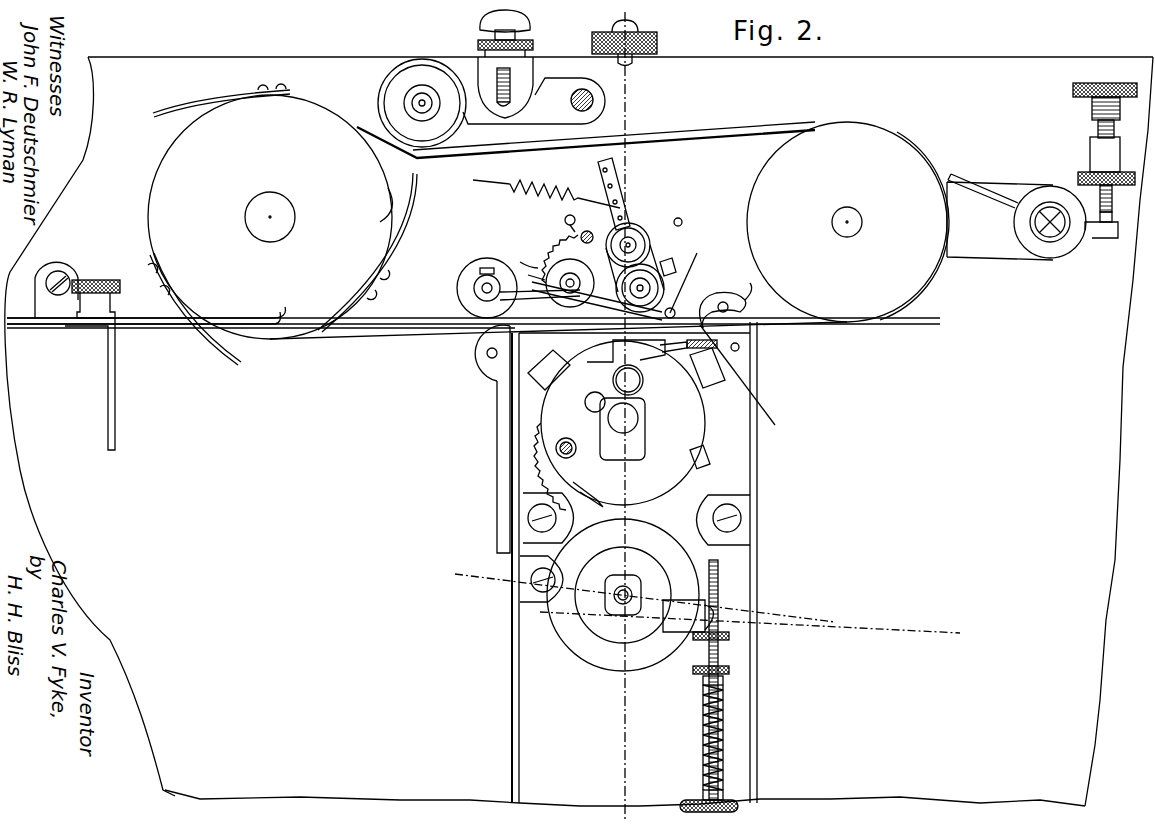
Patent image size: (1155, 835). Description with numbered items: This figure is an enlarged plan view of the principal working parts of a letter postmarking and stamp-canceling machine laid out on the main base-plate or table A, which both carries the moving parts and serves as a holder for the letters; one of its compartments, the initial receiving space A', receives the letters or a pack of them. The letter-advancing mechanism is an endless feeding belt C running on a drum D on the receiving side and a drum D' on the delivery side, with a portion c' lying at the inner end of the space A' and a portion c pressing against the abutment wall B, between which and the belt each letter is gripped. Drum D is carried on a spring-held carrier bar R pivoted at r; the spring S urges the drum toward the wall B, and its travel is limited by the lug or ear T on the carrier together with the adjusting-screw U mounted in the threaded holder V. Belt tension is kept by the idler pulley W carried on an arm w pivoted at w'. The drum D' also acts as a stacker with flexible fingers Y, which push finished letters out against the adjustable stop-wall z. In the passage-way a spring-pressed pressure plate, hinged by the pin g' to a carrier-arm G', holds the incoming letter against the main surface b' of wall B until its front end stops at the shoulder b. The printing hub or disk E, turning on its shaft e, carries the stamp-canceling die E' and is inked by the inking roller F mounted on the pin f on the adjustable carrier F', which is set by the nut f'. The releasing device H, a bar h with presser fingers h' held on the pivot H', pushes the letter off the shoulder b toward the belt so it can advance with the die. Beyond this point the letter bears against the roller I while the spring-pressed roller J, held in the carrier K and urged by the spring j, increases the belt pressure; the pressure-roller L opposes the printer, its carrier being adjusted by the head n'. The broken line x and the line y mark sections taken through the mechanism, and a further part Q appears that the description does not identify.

The main base-plate or table A is at (579, 431).
The initial receiving space A' is at (882, 576).
The section line x- x is at (618, 411).
The delivery-side pulley or drum D' is at (270, 217).
The flexible fingers Y is at (418, 185).
The belt portion at initial receiving space c' is at (388, 309).
The belt portion adjacent to abutment wall c is at (605, 328).
The idler pulley or roll W is at (390, 95).
The tightener arm w is at (534, 90).
The arm pivot w' is at (577, 74).
The adjusting-head n' is at (637, 43).
The endless feeding belt C is at (558, 222).
The spring Q is at (546, 183).
The roller spring j is at (575, 222).
The pressure-roller L is at (650, 262).
The spring-pressed roller J is at (466, 278).
The roller carrier K is at (532, 302).
The shoulder or projection b is at (597, 301).
The carrier-arm G' is at (559, 269).
The hinge pin g' is at (684, 265).
The abutment wall B is at (740, 344).
The roller I is at (472, 355).
The adjustable stop-wall z is at (108, 355).
The hub or heavy disk E is at (619, 425).
The disk shaft e is at (640, 412).
The stamp-canceling die E' is at (574, 457).
The releasing device H is at (624, 366).
The presser fingers or plates h' is at (600, 351).
The main surface of wall b' is at (656, 352).
The bar or plate h is at (706, 368).
The pivot H' is at (722, 370).
The inking roller or pad F is at (635, 582).
The nut f' is at (721, 616).
The adjustable carrier F' is at (745, 582).
The pin f is at (679, 680).
The section line y- y is at (703, 603).
The receiving-side pulley or drum D is at (848, 222).
The carrier bar or plate R is at (1000, 221).
The carrier pivot r is at (1050, 258).
The spring S is at (982, 195).
The lug or ear T is at (1098, 238).
The adjusting-screw U is at (1098, 130).
The threaded holder V is at (1090, 152).